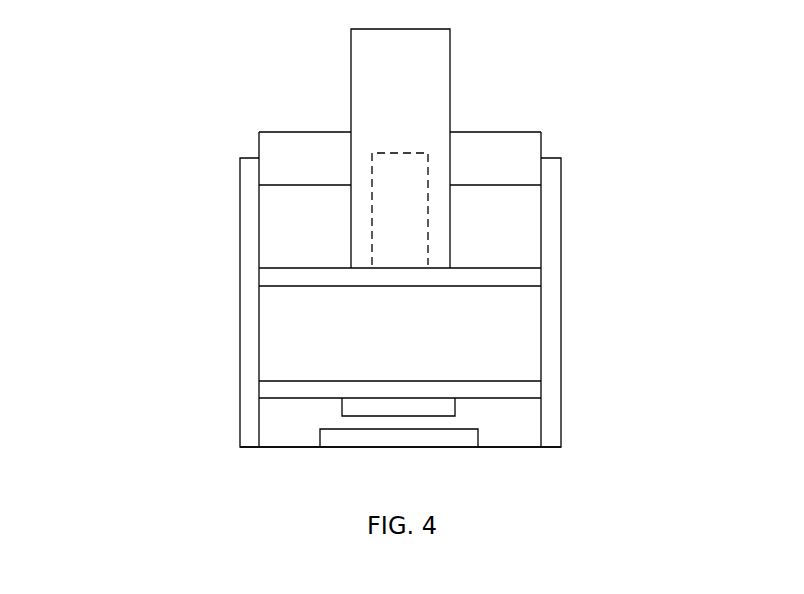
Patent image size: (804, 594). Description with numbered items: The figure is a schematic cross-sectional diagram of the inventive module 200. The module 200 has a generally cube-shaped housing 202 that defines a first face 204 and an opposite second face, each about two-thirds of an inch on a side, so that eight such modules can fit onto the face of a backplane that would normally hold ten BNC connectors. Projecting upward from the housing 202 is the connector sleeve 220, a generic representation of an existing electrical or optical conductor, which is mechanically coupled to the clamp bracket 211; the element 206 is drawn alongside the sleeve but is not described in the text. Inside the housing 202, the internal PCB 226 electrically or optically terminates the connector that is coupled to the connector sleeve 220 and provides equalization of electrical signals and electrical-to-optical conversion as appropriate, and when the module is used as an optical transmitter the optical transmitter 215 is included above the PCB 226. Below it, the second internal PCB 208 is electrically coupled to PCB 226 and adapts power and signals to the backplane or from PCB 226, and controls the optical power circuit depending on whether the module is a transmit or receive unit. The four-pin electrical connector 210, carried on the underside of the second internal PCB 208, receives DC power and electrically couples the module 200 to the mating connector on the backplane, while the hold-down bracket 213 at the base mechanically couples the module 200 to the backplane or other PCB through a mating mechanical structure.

The module 200 is at (180, 328).
The housing 202 is at (560, 325).
The first face 204 is at (273, 462).
The left body portion 206 is at (304, 116).
The second internal PCB 208 is at (512, 398).
The four-pin electrical connector 210 is at (342, 407).
The clamp bracket 211 is at (508, 132).
The hold-down bracket 213 is at (458, 438).
The optical transmitter 215 is at (427, 206).
The connector sleeve 220 is at (436, 69).
The internal PCB 226 is at (282, 267).